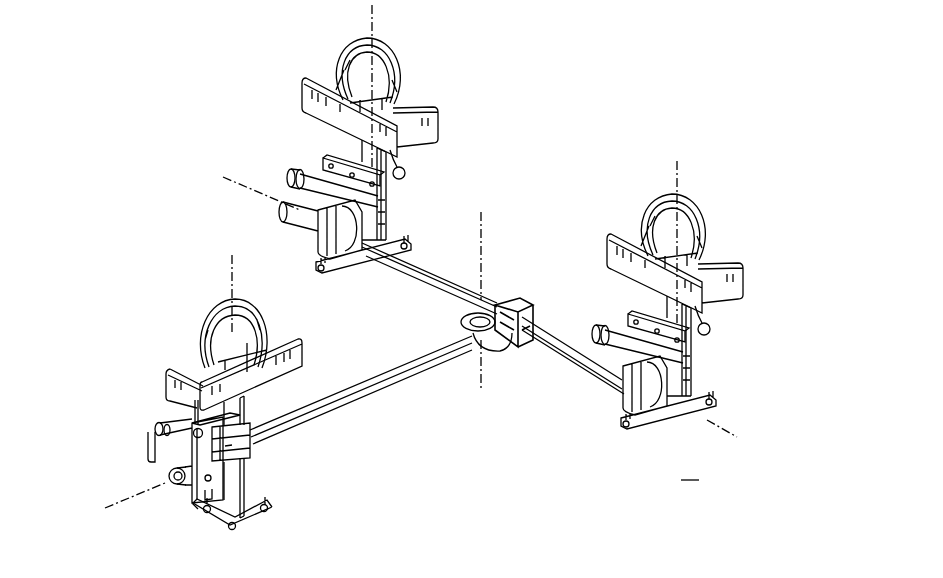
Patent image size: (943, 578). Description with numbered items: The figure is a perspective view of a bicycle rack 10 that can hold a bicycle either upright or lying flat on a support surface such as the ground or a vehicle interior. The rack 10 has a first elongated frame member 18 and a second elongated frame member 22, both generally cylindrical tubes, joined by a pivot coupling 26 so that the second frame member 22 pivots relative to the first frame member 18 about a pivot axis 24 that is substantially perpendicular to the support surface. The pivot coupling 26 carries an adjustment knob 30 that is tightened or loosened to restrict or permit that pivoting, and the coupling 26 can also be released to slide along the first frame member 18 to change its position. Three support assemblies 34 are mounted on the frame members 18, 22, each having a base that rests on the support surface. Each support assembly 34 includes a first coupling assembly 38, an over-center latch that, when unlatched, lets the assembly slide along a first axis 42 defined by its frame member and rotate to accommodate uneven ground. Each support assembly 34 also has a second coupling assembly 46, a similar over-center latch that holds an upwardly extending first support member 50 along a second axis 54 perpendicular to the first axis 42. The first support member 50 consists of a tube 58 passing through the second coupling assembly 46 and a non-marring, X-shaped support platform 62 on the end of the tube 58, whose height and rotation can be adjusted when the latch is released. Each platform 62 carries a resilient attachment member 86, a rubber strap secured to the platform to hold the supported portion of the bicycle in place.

The bicycle rack 10 is at (157, 186).
The first elongated frame member 18 is at (552, 337).
The second elongated frame member 22 is at (372, 387).
The pivot axis 24 is at (478, 233).
The pivot coupling 26 is at (505, 303).
The adjustment knob 30 is at (465, 310).
The support assembly 34 is at (325, 162).
The first coupling assembly 38 is at (313, 238).
The first axis 42 is at (250, 178).
The second coupling assembly 46 is at (247, 442).
The first support member 50 is at (420, 76).
The second axis 54 is at (374, 29).
The tube 58 is at (367, 147).
The support platform 62 is at (312, 81).
The resilient attachment member 86 is at (713, 332).